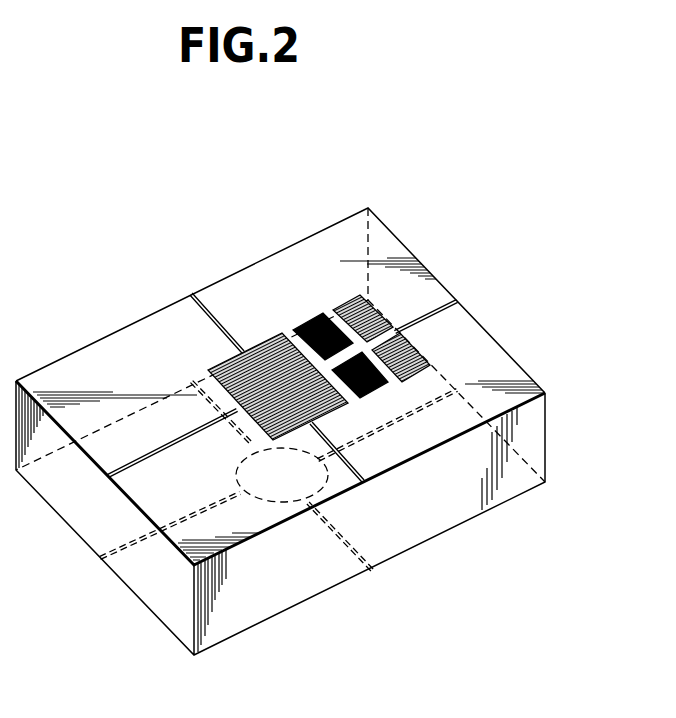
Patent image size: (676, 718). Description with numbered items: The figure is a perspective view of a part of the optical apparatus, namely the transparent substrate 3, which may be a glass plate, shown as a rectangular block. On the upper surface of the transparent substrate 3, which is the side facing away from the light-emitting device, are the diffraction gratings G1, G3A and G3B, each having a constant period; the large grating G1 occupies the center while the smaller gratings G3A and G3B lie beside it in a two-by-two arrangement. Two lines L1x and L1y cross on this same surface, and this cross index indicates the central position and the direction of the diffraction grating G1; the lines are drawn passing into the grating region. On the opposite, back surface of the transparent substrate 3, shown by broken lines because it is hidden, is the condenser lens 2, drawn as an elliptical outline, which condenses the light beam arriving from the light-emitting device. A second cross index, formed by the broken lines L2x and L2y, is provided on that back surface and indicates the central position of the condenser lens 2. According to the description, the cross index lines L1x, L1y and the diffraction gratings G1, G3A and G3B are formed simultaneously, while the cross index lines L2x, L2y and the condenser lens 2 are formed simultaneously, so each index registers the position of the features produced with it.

The condenser lens 2 is at (268, 503).
The transparent substrate 3 is at (548, 430).
The diffraction grating G1 is at (208, 366).
The diffraction grating G3A is at (298, 317).
The diffraction grating G3B is at (338, 293).
The cross index line L1x is at (458, 301).
The cross index line L1y is at (191, 294).
The cross index line L2x is at (100, 561).
The cross index line L2y is at (371, 569).